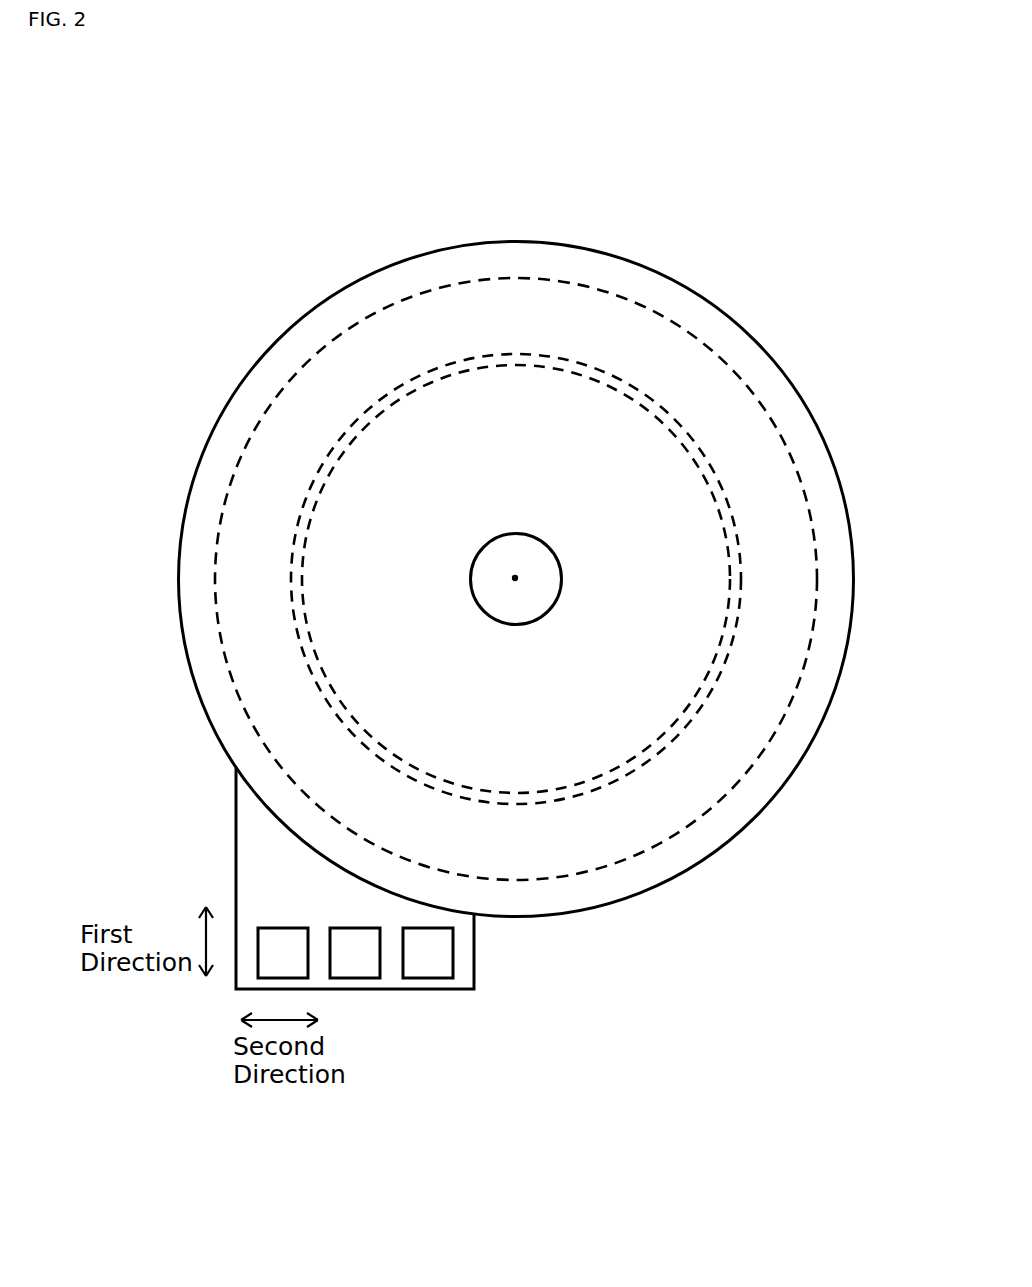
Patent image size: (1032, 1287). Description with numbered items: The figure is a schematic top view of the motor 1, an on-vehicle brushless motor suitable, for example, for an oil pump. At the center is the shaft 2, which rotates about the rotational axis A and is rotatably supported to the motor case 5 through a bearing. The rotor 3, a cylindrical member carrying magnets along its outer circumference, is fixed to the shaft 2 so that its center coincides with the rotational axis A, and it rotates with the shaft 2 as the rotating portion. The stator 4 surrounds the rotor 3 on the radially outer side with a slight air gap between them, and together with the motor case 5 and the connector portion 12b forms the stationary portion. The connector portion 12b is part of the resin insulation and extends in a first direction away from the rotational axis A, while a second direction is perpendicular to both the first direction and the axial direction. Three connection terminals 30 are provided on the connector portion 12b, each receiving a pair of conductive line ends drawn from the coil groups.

The motor 1 is at (588, 163).
The shaft 2 is at (481, 556).
The rotor 3 is at (677, 578).
The stator 4 is at (697, 377).
The motor case 5 is at (788, 380).
The connector portion 12b is at (474, 952).
The connection terminals 30 is at (427, 978).
The rotational axis A is at (517, 570).